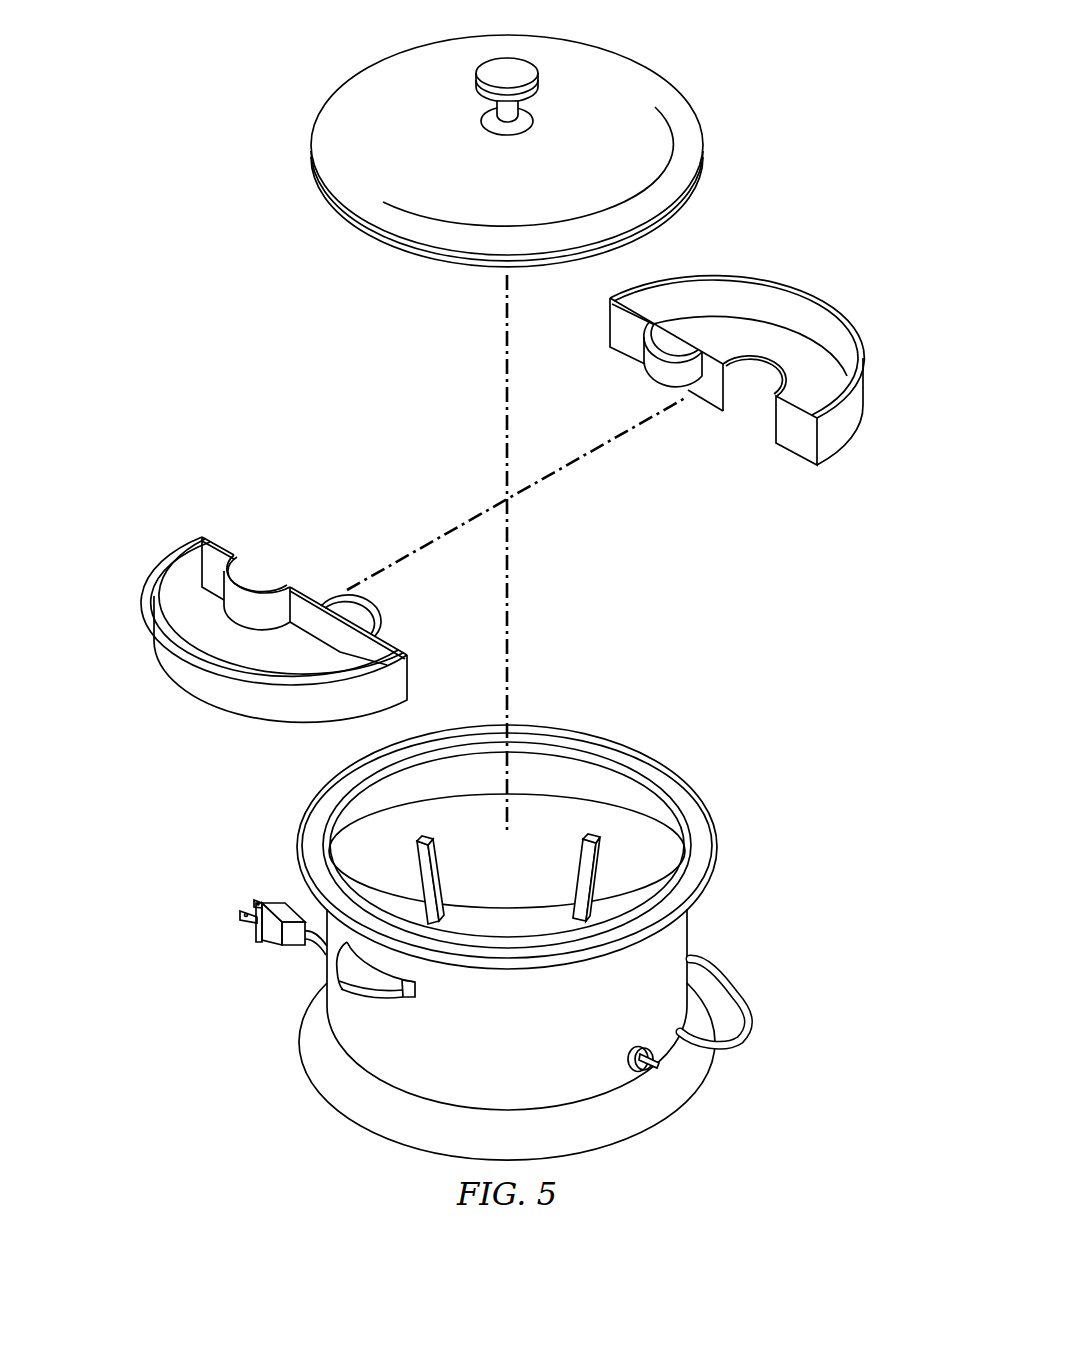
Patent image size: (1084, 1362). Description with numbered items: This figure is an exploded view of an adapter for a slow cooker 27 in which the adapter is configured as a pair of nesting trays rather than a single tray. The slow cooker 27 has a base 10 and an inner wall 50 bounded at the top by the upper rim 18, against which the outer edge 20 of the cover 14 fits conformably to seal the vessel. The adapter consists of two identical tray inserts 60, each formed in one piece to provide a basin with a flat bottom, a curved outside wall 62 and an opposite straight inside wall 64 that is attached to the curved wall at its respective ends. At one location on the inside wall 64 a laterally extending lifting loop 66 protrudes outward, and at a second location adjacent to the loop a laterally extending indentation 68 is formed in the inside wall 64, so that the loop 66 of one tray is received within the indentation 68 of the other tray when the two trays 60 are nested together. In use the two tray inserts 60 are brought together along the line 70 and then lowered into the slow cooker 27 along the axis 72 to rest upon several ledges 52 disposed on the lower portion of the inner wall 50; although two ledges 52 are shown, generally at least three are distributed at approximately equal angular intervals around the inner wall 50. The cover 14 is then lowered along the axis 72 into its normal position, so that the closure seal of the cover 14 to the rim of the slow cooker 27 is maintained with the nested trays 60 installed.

The base 10 is at (688, 932).
The cover 14 is at (357, 95).
The upper rim 18 is at (698, 817).
The outer edge 20 is at (375, 238).
The slow cooker 27 is at (752, 70).
The inner wall 50 is at (378, 884).
The ledges 52 is at (440, 883).
The tray insert 60 is at (760, 272).
The curved outside wall 62 is at (833, 437).
The straight inside wall 64 is at (800, 438).
The lifting loop 66 is at (658, 376).
The indentation 68 is at (747, 398).
The line 70 is at (455, 528).
The axis 72 is at (501, 400).